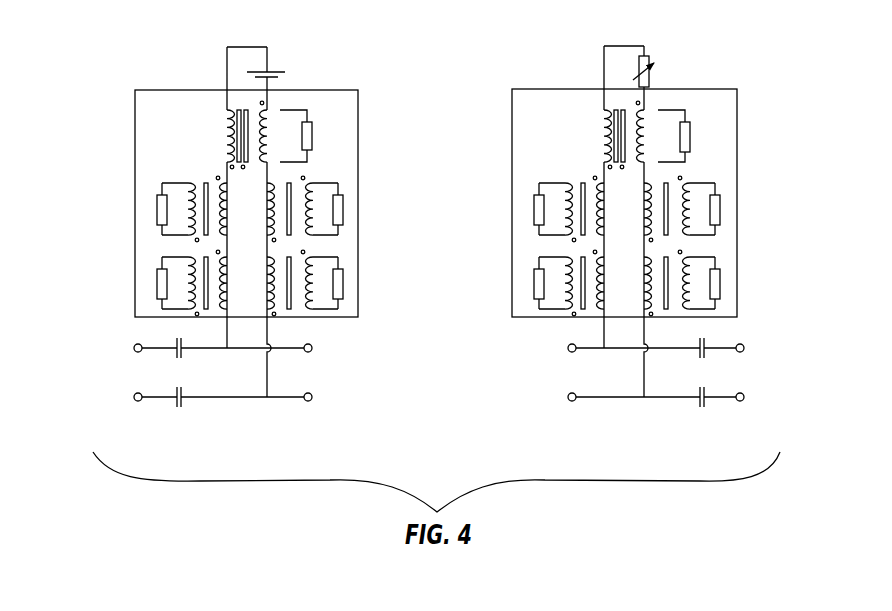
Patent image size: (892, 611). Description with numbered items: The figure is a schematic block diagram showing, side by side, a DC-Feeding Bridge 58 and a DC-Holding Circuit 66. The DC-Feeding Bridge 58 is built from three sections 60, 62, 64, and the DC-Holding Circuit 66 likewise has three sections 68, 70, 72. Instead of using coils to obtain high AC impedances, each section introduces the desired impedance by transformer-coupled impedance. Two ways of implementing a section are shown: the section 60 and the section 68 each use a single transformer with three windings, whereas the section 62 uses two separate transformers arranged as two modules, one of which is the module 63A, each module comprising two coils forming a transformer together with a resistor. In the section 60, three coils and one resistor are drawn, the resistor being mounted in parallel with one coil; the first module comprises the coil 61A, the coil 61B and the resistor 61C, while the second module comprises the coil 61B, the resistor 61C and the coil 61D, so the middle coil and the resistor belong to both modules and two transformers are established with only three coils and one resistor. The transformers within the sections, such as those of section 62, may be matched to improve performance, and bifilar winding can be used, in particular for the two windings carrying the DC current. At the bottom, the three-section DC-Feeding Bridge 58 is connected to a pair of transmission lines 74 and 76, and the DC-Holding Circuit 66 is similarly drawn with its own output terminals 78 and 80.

The DC-Feeding Bridge 58 is at (133, 86).
The section 60 is at (162, 127).
The coil 61A is at (225, 138).
The coil 61B is at (246, 107).
The resistor 61C is at (313, 137).
The coil 61D is at (272, 138).
The section 62 is at (203, 203).
The module 63A is at (160, 193).
The section 64 is at (134, 280).
The DC-Holding Circuit 66 is at (510, 85).
The section 68 is at (710, 137).
The section 70 is at (733, 210).
The section 72 is at (733, 285).
The transmission line 74 is at (134, 348).
The transmission line 76 is at (134, 397).
The first output line of second circuit 78 is at (588, 350).
The second output line of second circuit 80 is at (677, 398).